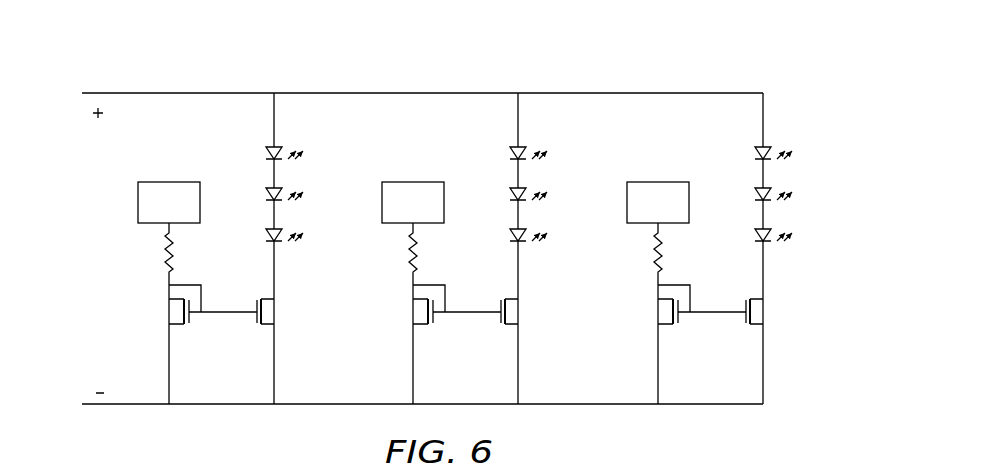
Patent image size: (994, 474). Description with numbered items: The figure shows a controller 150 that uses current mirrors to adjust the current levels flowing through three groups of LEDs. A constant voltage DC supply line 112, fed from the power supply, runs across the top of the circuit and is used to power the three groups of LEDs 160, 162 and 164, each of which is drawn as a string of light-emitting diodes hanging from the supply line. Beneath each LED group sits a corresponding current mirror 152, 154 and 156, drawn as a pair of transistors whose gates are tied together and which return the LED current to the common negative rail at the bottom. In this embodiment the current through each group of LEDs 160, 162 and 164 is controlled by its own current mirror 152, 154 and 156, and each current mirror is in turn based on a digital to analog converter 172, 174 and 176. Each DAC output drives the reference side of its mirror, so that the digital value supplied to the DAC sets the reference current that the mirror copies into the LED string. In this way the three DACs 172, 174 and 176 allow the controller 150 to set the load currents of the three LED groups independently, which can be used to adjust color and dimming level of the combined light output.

The constant voltage DC supply line 112 is at (93, 92).
The controller 150 is at (636, 60).
The current mirror 152 is at (160, 312).
The current mirror 154 is at (421, 323).
The current mirror 156 is at (666, 323).
The group of LEDs 160 is at (297, 136).
The group of LEDs 162 is at (556, 167).
The group of LEDs 164 is at (800, 167).
The digital to analog converter (DAC) 172 is at (161, 181).
The digital to analog converter (DAC) 174 is at (413, 206).
The digital to analog converter (DAC) 176 is at (658, 206).